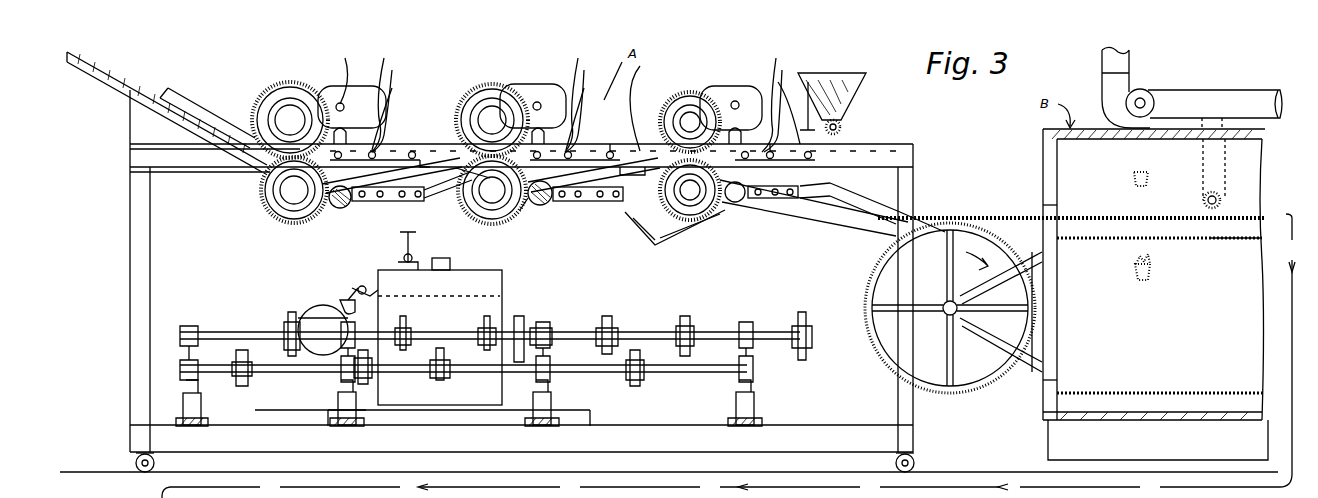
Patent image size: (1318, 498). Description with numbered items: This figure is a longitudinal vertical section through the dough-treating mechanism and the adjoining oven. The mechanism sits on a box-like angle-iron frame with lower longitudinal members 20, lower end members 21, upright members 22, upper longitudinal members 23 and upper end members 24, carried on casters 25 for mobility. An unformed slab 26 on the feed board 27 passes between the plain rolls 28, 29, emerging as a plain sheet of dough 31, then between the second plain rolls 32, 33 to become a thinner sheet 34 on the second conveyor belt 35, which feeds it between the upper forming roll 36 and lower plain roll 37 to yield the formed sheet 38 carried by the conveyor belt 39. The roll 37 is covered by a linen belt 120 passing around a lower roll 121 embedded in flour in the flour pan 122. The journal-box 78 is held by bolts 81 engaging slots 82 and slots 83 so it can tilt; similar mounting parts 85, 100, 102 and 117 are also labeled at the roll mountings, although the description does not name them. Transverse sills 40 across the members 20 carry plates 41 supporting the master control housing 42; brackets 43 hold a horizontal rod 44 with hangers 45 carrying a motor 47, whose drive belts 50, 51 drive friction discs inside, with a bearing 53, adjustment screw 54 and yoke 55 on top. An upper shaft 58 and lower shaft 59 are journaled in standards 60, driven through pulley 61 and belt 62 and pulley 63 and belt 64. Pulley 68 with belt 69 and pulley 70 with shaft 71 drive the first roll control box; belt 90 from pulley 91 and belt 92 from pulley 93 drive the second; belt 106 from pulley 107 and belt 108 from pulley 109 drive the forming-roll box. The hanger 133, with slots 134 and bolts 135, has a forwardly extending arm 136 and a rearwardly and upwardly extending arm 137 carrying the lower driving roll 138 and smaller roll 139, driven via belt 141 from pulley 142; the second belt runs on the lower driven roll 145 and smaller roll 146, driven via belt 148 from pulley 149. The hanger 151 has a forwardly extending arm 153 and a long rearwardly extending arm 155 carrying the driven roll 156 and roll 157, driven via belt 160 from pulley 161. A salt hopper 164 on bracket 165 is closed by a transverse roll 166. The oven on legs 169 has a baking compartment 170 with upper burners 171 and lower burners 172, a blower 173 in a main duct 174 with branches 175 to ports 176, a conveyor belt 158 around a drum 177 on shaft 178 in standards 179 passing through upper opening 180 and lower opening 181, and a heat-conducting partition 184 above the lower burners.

The lower longitudinal members 20 is at (800, 425).
The lower end members 21 is at (130, 440).
The upright members 22 is at (130, 360).
The upper longitudinal members 23 is at (194, 172).
The upper end members 24 is at (130, 162).
The casters 25 is at (128, 466).
The unformed slab 26 is at (198, 98).
The feed board 27 is at (120, 72).
The plain roll 28 is at (266, 92).
The plain roll 29 is at (260, 204).
The plain sheet of dough 31 is at (388, 144).
The plain roll 32 is at (489, 84).
The plain roll 33 is at (490, 225).
The sheet of reduced thickness 34 is at (625, 160).
The second conveyor belt 35 is at (544, 205).
The upper forming roll 36 is at (690, 92).
The lower plain roll 37 is at (702, 220).
The formed sheet 38 is at (870, 208).
The conveyor belt 39 is at (782, 199).
The transverse sills 40 is at (208, 421).
The plates 41 is at (330, 410).
The master control housing 42 is at (502, 276).
The brackets 43 is at (366, 286).
The horizontal rod 44 is at (355, 290).
The hangers 45 is at (345, 300).
The motor 47 is at (312, 286).
The drive belt 50 is at (425, 151).
The drive belt 51 is at (394, 296).
The bearing 53 is at (450, 262).
The adjustment screw 54 is at (402, 252).
The yoke 55 is at (416, 254).
The upper shaft 58 is at (708, 330).
The lower shaft 59 is at (676, 372).
The standards 60 is at (201, 398).
The pulley 61 is at (538, 326).
The belt 62 is at (516, 316).
The pulley 63 is at (368, 380).
The belt 64 is at (370, 386).
The pulley 68 is at (286, 330).
The belt 69 is at (288, 316).
The pulley 70 is at (248, 380).
The shaft 71 is at (236, 352).
The journal-box 78 is at (352, 102).
The bolts 81 is at (580, 105).
The slots 82 is at (577, 97).
The slots 83 is at (481, 112).
The pivot 85 is at (569, 93).
The belt 90 is at (486, 316).
The pulley 91 is at (480, 330).
The belt 92 is at (444, 354).
The pulley 93 is at (450, 376).
The bracket 100 is at (532, 82).
The pivot 102 is at (538, 100).
The belt 106 is at (682, 316).
The pulley 107 is at (676, 330).
The belt 108 is at (640, 356).
The pulley 109 is at (644, 380).
The bracket 117 is at (738, 100).
The belt 120 is at (648, 238).
The lower roll 121 is at (652, 244).
The flour pan 122 is at (690, 247).
The hanger 133 is at (390, 201).
The slots 134 is at (374, 151).
The bolts 135 is at (776, 106).
The forwardly extending arm 136 is at (350, 206).
The rearwardly and upwardly extending arm 137 is at (430, 200).
The lower driving roll 138 is at (338, 208).
The smaller roll 139 is at (458, 172).
The belt 141 is at (420, 325).
The pulley 142 is at (410, 330).
The lower driven roll 145 is at (532, 207).
The smaller roll 146 is at (630, 108).
The belt 148 is at (630, 312).
The pulley 149 is at (602, 346).
The hanger 151 is at (845, 224).
The forwardly extending arm 153 is at (752, 200).
The rearwardly extending arm 155 is at (860, 215).
The driven roll 156 is at (738, 203).
The roll 157 is at (926, 206).
The conveyor belt 158 is at (1010, 220).
The belt 160 is at (806, 314).
The pulley 161 is at (812, 326).
The salt hopper 164 is at (858, 82).
The bracket 165 is at (806, 84).
The transverse roll 166 is at (840, 124).
The legs 169 is at (1070, 444).
The baking compartment 170 is at (1043, 166).
The burners 171 is at (1134, 174).
The burners 172 is at (1150, 278).
The blower 173 is at (1102, 100).
The main duct 174 is at (1180, 92).
The branches 175 is at (1228, 126).
The ports 176 is at (1204, 201).
The drum 177 is at (1006, 368).
The shaft 178 is at (942, 300).
The standards 179 is at (1034, 366).
The upper opening 180 is at (1050, 210).
The lower opening 181 is at (1058, 380).
The heat-conducting partition 184 is at (1206, 244).